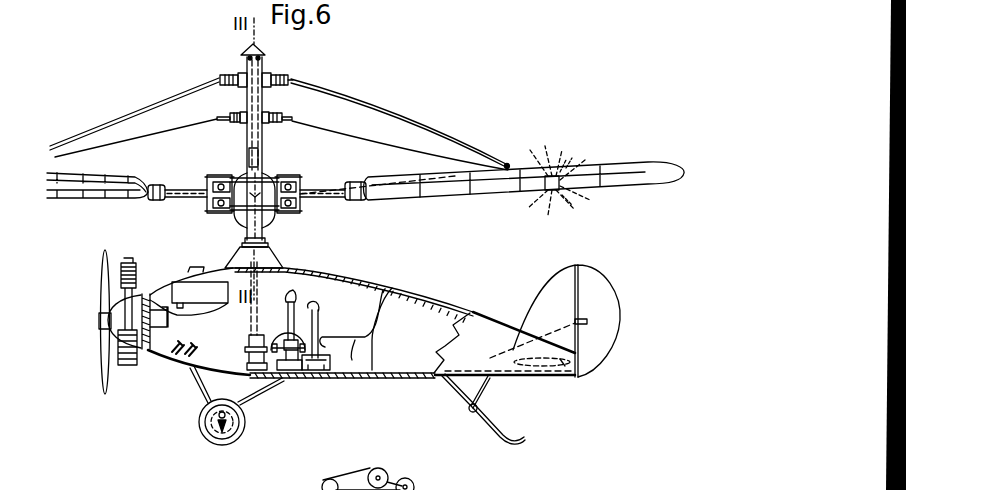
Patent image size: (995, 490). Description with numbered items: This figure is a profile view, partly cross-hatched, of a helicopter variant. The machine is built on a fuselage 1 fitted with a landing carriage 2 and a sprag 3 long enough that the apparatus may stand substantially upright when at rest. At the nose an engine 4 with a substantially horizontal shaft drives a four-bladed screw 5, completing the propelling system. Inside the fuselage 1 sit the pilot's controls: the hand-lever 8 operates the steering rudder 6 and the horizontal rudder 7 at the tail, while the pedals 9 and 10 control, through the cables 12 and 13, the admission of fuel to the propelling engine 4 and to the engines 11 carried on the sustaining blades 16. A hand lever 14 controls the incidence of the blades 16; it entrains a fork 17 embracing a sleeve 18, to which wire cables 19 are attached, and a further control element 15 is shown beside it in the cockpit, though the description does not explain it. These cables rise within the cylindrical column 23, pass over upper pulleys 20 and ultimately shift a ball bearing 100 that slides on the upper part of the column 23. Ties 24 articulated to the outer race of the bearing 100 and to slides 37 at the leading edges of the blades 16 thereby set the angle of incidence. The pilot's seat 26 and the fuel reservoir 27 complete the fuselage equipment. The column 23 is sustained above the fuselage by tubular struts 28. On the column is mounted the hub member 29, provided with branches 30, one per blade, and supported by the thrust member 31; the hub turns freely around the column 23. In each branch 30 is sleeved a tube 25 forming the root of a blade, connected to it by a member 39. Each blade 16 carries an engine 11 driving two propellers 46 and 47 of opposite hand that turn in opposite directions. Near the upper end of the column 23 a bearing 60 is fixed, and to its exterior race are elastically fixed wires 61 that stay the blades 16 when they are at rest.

The fuselage 1 is at (455, 358).
The landing carriage 2 is at (235, 432).
The sprag 3 is at (500, 446).
The engine 4 is at (126, 368).
The screw 5 is at (103, 348).
The steering rudder 6 is at (612, 302).
The horizontal rudder 7 is at (538, 366).
The hand-lever 8 is at (317, 368).
The pedal 9 is at (170, 360).
The pedal 10 is at (182, 362).
The engine 11 is at (545, 197).
The cable 12 is at (150, 355).
The cable 13 is at (255, 268).
The hand lever 14 is at (295, 290).
The lever quadrant 15 is at (282, 342).
The sustaining blade 16 is at (617, 165).
The fork 17 is at (282, 378).
The sleeve 18 is at (245, 316).
The wire cable 19 is at (259, 105).
The upper pulley 20 is at (261, 57).
The cylindrical column 23 is at (262, 139).
The tie 24 is at (130, 111).
The tube 25 is at (313, 185).
The pilot's seat 26 is at (387, 288).
The fuel reservoir 27 is at (186, 270).
The tubular strut 28 is at (235, 258).
The hub member 29 is at (238, 177).
The branch 30 is at (288, 175).
The thrust member 31 is at (245, 222).
The slide 37 is at (505, 163).
The member 39 is at (153, 185).
The interior screw 46 is at (567, 218).
The exterior screw 47 is at (570, 157).
The bearing 60 is at (238, 112).
The wire 61 is at (398, 148).
The ball bearing 100 is at (293, 76).